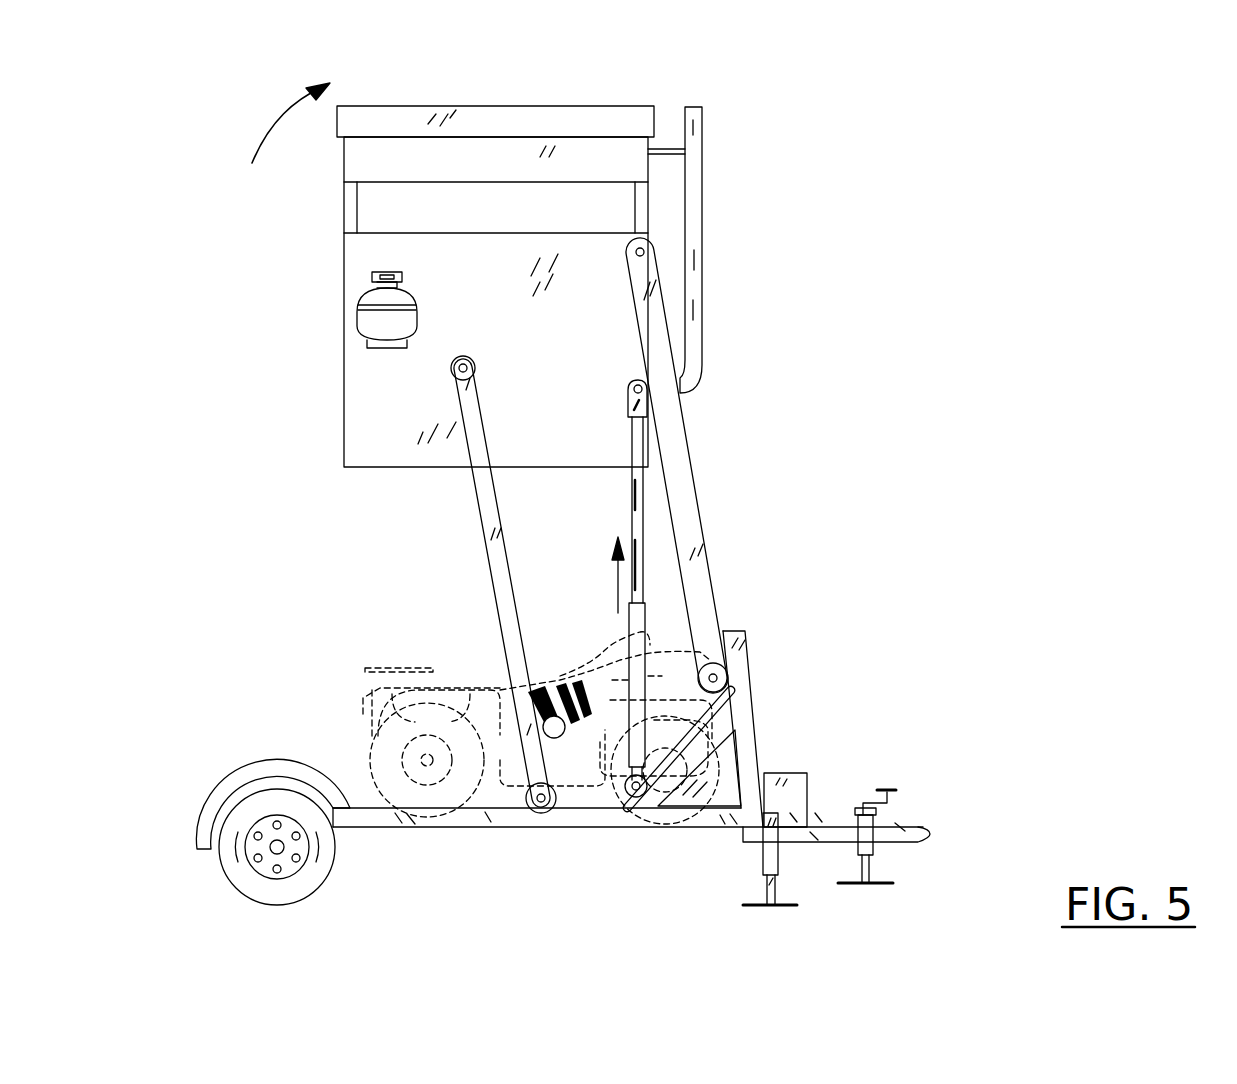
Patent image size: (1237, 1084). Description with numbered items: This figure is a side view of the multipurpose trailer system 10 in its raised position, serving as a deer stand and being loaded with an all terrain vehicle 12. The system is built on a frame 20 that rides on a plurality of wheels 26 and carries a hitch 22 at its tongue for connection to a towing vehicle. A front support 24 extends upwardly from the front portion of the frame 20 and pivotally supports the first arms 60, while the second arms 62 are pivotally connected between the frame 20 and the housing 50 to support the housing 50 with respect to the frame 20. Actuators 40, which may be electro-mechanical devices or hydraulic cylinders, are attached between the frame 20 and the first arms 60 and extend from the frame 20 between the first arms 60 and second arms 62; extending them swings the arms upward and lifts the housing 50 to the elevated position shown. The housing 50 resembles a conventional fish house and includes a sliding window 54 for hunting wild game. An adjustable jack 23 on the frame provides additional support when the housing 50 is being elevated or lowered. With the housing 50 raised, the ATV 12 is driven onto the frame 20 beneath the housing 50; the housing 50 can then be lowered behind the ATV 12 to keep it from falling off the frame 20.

The multipurpose trailer system 10 is at (999, 129).
The all terrain vehicle 12 is at (373, 679).
The frame 20 is at (502, 828).
The hitch 22 is at (903, 838).
The adjustable jack 23 is at (768, 859).
The front support 24 is at (743, 682).
The wheel 26 is at (298, 892).
The actuator 40 is at (638, 520).
The housing 50 is at (355, 401).
The sliding window 54 is at (373, 207).
The first arm 60 is at (680, 481).
The second arm 62 is at (503, 582).